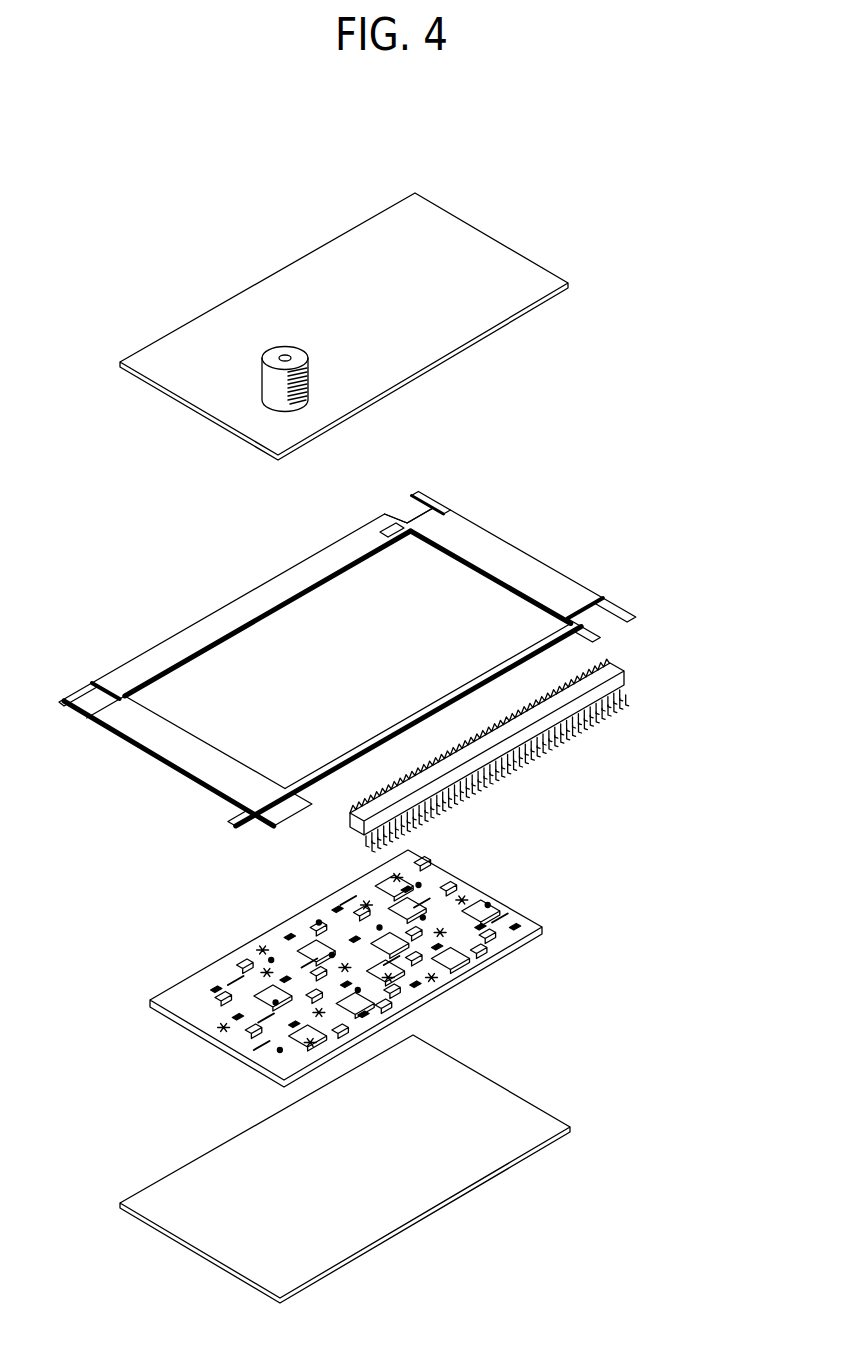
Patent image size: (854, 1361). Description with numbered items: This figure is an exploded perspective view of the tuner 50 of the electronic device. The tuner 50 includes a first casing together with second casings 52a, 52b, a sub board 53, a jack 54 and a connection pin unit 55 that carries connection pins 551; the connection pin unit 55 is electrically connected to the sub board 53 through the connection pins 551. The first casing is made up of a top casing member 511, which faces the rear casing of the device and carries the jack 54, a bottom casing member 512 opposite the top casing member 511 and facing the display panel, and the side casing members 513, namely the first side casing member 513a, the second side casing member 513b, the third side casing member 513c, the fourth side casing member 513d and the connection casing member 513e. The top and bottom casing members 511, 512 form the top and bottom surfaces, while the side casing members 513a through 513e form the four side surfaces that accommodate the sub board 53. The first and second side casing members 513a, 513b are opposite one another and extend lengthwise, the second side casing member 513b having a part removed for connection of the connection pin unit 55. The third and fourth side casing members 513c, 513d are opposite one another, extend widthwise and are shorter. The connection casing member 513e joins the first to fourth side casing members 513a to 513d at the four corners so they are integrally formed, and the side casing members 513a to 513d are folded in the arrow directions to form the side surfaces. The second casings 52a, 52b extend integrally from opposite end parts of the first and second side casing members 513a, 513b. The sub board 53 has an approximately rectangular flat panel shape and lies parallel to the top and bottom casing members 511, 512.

The tuner 50 is at (172, 222).
The top casing member 511 is at (568, 284).
The bottom casing member 512 is at (570, 1128).
The side casing members 513 is at (347, 655).
The first side casing member 513a is at (158, 624).
The second side casing member 513b is at (447, 700).
The third side casing member 513c is at (207, 770).
The fourth side casing member 513d is at (533, 565).
The connection casing member 513e is at (382, 530).
The second casing 52a is at (410, 530).
The second casing 52b is at (430, 500).
The sub board 53 is at (148, 1000).
The jack 54 is at (277, 378).
The connection pin unit 55 is at (500, 755).
The connection pins 551 is at (487, 775).